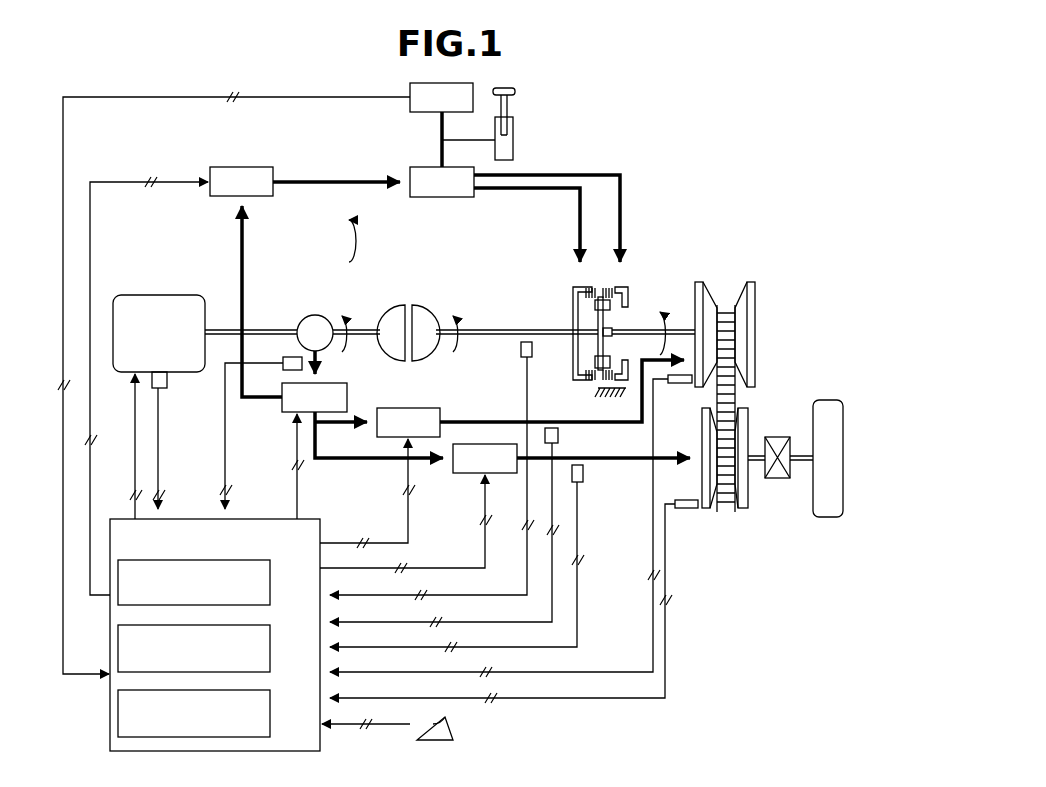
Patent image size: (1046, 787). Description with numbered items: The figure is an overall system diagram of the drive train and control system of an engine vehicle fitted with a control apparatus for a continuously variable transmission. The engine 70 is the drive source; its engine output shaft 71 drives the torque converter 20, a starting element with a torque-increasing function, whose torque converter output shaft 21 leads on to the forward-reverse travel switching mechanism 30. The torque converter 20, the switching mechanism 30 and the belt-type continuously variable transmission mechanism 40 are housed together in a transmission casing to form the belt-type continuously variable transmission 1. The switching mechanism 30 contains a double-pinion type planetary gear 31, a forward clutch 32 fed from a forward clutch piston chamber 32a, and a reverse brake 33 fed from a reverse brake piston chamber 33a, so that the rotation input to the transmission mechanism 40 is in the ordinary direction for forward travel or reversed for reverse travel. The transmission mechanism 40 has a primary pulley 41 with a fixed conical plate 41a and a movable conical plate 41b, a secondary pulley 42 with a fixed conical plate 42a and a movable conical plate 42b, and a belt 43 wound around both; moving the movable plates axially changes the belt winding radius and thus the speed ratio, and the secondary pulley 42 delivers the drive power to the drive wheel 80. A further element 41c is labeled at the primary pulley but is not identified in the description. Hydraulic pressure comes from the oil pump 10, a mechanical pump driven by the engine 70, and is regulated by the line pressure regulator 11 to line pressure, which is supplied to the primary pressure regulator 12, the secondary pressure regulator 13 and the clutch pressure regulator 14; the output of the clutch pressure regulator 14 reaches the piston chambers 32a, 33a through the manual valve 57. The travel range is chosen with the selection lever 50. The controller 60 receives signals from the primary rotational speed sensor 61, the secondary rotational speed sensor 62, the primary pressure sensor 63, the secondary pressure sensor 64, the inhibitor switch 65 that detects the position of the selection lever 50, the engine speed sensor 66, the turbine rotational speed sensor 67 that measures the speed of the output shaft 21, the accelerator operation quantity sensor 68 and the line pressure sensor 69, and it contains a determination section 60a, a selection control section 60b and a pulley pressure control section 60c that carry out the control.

The belt-type continuously variable transmission 1 is at (766, 160).
The oil pump 10 is at (316, 314).
The line pressure regulator 11 is at (283, 410).
The primary pressure regulator 12 is at (421, 407).
The secondary pressure regulator 13 is at (456, 474).
The clutch pressure regulator 14 is at (244, 166).
The torque converter 20 is at (412, 304).
The torque converter output shaft 21 is at (480, 328).
The forward-reverse travel switching mechanism 30 is at (599, 302).
The double-pinion type planetary gear 31 is at (607, 286).
The forward clutch 32 is at (580, 290).
The forward clutch piston chamber 32a is at (573, 289).
The reverse brake 33 is at (606, 300).
The reverse brake piston chamber 33a is at (624, 285).
The belt-type continuously variable transmission mechanism 40 is at (729, 383).
The primary pulley 41 is at (729, 309).
The fixed conical plate 41a is at (752, 281).
The movable conical plate 41b is at (699, 281).
The primary pulley shaft 41c is at (680, 330).
The secondary pulley 42 is at (750, 490).
The fixed conical plate 42a is at (706, 509).
The movable conical plate 42b is at (744, 509).
The belt 43 is at (737, 392).
The selection lever 50 is at (545, 112).
The manual valve 57 is at (445, 198).
The controller 60 is at (215, 609).
The determination section 60a is at (270, 583).
The selection control section 60b is at (270, 648).
The pulley pressure control section 60c is at (270, 713).
The primary rotational speed sensor 61 is at (679, 384).
The secondary rotational speed sensor 62 is at (689, 508).
The primary pressure sensor 63 is at (559, 436).
The secondary pressure sensor 64 is at (584, 474).
The inhibitor switch 65 is at (420, 113).
The engine speed sensor 66 is at (167, 388).
The turbine rotational speed sensor 67 is at (520, 352).
The accelerator operation quantity sensor 68 is at (452, 721).
The line pressure sensor 69 is at (291, 356).
The engine 70 is at (159, 294).
The engine output shaft 71 is at (367, 328).
The drive wheel 80 is at (828, 399).